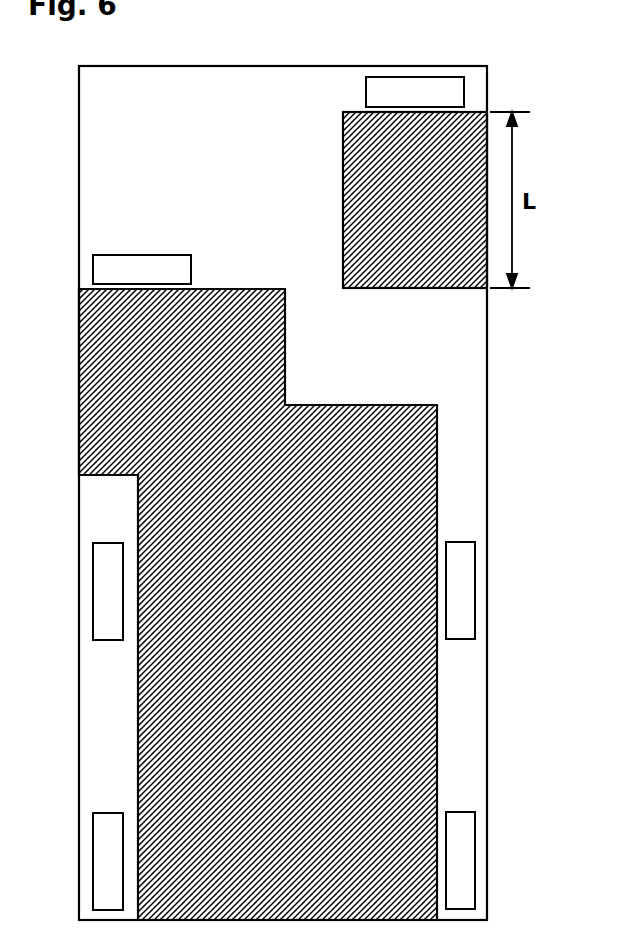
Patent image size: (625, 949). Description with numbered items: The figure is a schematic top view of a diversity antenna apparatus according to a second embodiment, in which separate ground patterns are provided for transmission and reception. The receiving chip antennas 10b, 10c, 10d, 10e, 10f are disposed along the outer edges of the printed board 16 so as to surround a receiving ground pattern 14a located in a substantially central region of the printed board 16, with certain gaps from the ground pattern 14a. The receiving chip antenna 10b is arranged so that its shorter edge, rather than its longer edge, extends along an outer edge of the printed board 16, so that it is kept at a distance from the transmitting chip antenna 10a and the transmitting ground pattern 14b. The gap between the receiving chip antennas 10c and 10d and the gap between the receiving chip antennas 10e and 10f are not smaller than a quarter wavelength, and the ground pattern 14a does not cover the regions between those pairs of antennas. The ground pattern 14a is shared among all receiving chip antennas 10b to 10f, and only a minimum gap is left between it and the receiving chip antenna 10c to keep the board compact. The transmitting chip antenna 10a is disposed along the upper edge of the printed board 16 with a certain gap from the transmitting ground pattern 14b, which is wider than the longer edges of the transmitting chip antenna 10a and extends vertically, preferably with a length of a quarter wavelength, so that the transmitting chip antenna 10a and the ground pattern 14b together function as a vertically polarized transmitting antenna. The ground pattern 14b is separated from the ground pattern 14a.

The transmitting chip antenna 10a is at (420, 76).
The receiving chip antenna 10b is at (146, 255).
The receiving chip antenna 10c is at (94, 592).
The receiving chip antenna 10d is at (94, 862).
The receiving chip antenna 10e is at (475, 858).
The receiving chip antenna 10f is at (475, 590).
The receiving ground pattern 14a is at (300, 912).
The transmitting ground pattern 14b is at (351, 205).
The printed board 16 is at (487, 452).